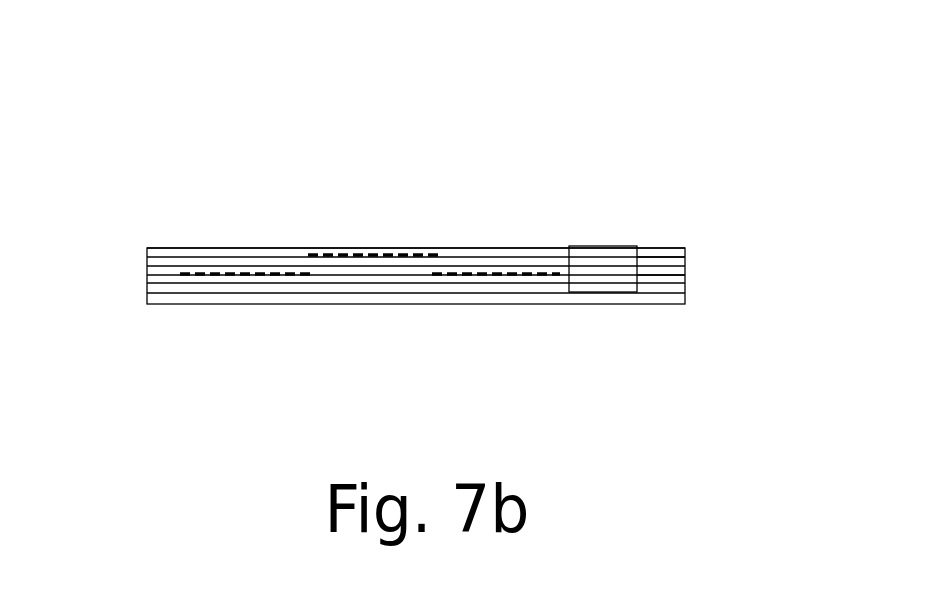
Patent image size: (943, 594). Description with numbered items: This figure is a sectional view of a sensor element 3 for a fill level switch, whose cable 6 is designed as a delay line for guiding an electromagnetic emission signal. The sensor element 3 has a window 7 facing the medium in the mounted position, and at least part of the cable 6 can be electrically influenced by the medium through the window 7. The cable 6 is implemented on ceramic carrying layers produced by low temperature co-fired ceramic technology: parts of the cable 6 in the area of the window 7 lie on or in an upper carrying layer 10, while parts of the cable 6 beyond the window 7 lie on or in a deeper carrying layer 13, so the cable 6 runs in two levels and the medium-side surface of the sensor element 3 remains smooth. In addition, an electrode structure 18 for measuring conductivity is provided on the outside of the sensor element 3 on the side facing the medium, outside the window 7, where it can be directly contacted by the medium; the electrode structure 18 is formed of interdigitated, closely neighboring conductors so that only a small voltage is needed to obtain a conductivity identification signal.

The sensor element 3 is at (174, 334).
The cable 6 is at (333, 253).
The window 7 is at (482, 197).
The carrying layer 10 is at (653, 257).
The carrying layer 13 is at (673, 272).
The electrode structure 18 is at (569, 291).